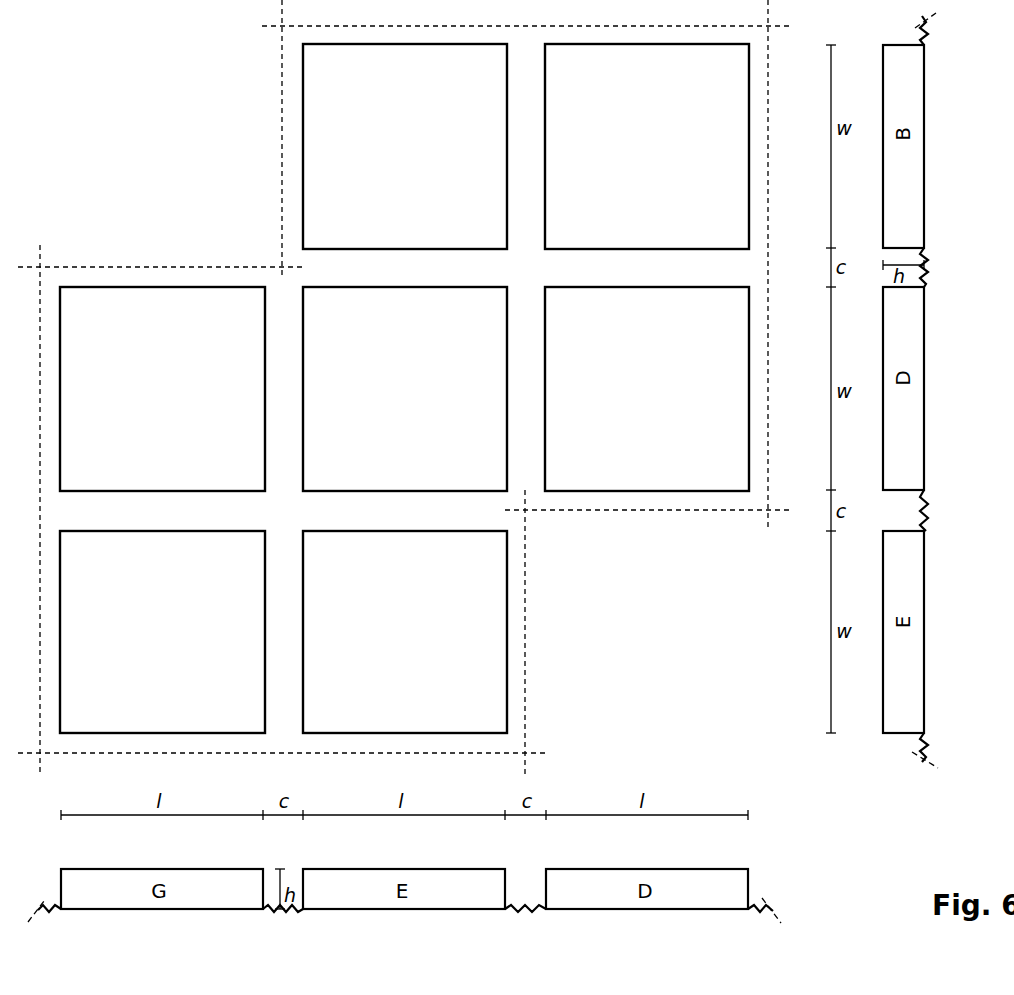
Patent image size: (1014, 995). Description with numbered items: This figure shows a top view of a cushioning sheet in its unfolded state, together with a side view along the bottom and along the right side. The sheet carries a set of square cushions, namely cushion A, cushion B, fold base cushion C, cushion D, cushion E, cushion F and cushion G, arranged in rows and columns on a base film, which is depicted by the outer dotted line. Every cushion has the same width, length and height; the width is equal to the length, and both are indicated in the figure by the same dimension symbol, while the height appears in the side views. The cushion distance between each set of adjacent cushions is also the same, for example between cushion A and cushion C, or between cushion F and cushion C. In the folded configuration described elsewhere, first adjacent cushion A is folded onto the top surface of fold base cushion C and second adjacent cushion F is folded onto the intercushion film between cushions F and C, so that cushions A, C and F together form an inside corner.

The first adjacent cushion A is at (405, 146).
The cushion B is at (647, 146).
The fold base cushion C is at (405, 389).
The cushion D is at (647, 389).
The cushion E is at (405, 632).
The second adjacent cushion F is at (162, 389).
The cushion G is at (162, 632).